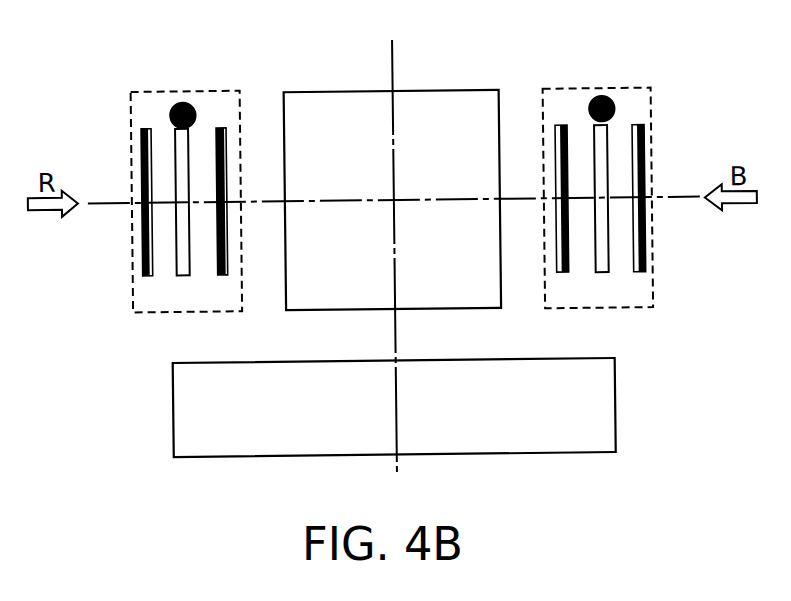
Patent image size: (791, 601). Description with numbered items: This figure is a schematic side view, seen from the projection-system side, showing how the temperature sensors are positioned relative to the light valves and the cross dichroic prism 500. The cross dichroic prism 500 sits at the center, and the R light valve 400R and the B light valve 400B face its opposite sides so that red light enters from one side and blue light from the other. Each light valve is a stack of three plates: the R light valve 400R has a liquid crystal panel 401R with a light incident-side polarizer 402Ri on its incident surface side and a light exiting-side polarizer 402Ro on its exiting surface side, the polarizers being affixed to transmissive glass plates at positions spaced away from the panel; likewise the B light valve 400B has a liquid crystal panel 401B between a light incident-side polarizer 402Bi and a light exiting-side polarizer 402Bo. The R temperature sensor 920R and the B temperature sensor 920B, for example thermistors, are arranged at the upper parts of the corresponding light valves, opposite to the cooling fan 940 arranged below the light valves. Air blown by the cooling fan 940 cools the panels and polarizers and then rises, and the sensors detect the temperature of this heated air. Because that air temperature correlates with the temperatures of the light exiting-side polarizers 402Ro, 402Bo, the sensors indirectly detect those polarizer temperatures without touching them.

The R light valve 400R is at (133, 107).
The R temperature sensor 920R is at (183, 100).
The light incident-side polarizer 402Ri is at (147, 273).
The liquid crystal panel 401R is at (183, 273).
The light exiting-side polarizer 402Ro is at (223, 273).
The cross dichroic prism 500 is at (343, 91).
The cooling fan 940 is at (614, 430).
The B light valve 400B is at (653, 109).
The B temperature sensor 920B is at (604, 98).
The light exiting-side polarizer 402Bo is at (563, 274).
The liquid crystal panel 401B is at (602, 274).
The light incident-side polarizer 402Bi is at (640, 274).